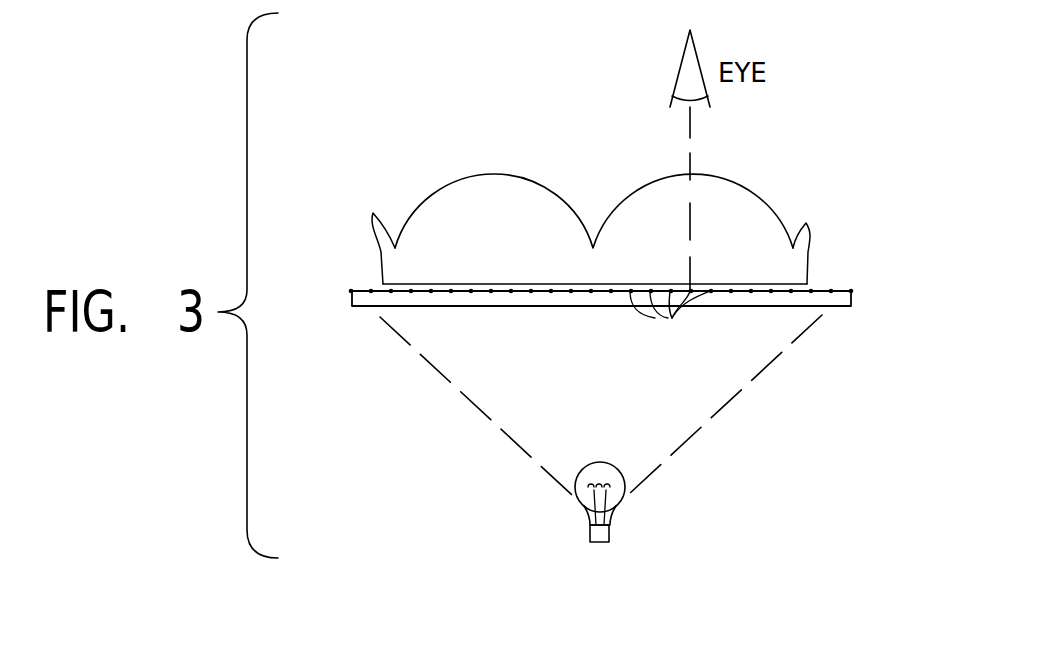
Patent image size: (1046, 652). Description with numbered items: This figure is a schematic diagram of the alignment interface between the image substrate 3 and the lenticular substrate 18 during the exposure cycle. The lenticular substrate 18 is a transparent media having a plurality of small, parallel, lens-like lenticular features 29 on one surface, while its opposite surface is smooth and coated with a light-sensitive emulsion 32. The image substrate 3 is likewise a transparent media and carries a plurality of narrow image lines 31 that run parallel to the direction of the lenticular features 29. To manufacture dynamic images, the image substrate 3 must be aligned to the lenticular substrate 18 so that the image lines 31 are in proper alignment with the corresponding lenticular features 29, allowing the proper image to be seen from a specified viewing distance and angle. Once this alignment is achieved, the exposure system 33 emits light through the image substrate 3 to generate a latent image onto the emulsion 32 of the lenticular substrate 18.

The image substrate 3 is at (851, 298).
The lenticular substrate 18 is at (807, 270).
The lenticular features 29 is at (770, 207).
The image lines 31 is at (672, 318).
The light-sensitive emulsion 32 is at (508, 283).
The exposure system 33 is at (600, 462).